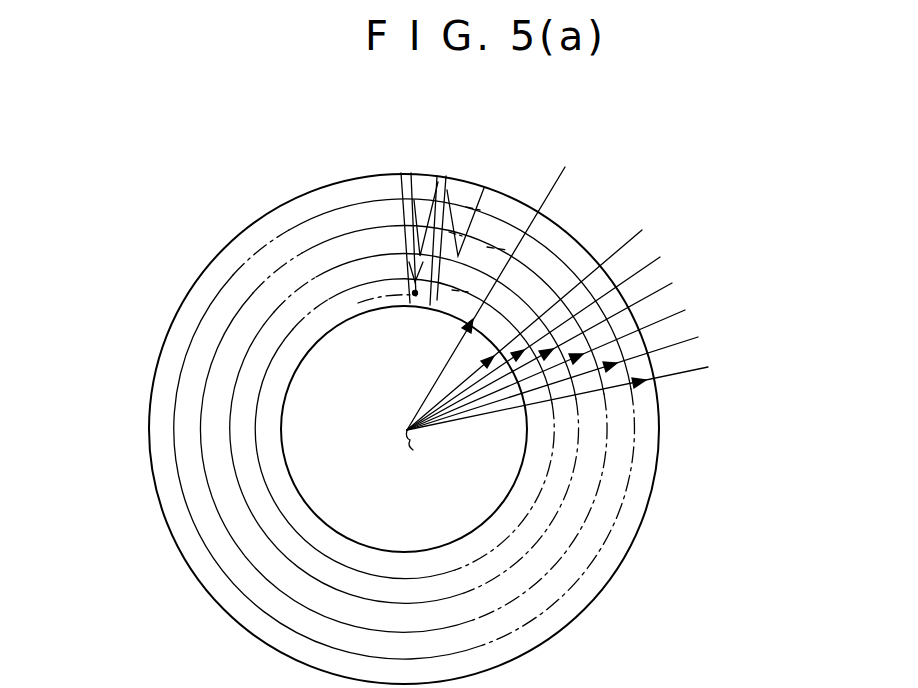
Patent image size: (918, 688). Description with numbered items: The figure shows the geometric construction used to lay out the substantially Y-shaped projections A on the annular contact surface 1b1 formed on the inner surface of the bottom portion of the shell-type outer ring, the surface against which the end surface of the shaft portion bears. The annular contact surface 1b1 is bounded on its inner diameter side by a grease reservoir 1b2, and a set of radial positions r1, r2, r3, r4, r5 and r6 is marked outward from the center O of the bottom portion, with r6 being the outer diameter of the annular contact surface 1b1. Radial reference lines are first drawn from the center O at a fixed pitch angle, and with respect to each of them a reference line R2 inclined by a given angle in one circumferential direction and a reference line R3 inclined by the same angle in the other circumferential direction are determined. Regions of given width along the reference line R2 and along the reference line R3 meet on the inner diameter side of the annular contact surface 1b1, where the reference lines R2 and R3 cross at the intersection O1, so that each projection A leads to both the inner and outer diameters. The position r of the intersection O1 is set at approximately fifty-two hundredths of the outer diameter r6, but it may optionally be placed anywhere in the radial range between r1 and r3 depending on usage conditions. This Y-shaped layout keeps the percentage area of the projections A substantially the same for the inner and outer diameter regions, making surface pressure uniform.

The annular contact surface 1b1 is at (222, 232).
The grease reservoir 1b2 is at (416, 393).
The center O is at (424, 451).
The intersection O1 is at (403, 283).
The projection A is at (400, 222).
The reference line R2 is at (402, 177).
The reference line R3 is at (446, 178).
The position of the intersection r is at (491, 288).
The radial position r1 is at (533, 316).
The radial position r2 is at (544, 331).
The radial position r3 is at (552, 345).
The radial position r4 is at (560, 359).
The radial position r5 is at (566, 373).
The outer diameter r6 is at (570, 388).